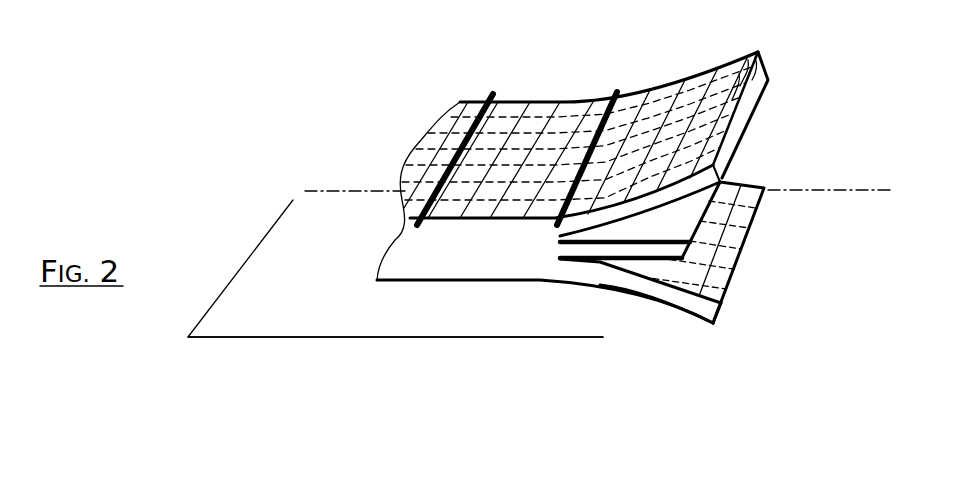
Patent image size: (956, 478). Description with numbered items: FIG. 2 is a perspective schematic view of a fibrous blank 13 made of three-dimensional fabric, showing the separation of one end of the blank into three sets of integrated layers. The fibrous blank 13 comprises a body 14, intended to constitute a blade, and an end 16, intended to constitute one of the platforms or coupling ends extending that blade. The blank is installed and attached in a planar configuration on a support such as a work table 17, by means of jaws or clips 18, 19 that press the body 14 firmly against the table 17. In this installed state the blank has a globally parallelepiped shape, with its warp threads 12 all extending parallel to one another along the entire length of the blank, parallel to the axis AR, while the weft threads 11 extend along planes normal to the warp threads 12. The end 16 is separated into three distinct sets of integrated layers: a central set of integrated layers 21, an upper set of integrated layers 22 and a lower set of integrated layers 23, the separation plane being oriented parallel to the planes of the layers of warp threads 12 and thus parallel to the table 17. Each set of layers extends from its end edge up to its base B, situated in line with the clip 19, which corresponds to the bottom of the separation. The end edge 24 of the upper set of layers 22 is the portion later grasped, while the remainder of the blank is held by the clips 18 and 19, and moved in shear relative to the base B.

The weft threads 11 is at (723, 87).
The warp threads 12 is at (768, 81).
The fibrous blank 13 is at (364, 100).
The body 14 is at (454, 300).
The end 16 is at (658, 320).
The work table 17 is at (395, 315).
The clip 18 is at (493, 94).
The clip 19 is at (620, 88).
The central set of integrated layers 21 is at (732, 215).
The upper set of integrated layers 22 is at (737, 157).
The lower set of integrated layers 23 is at (727, 300).
The end edge 24 is at (739, 127).
The axis AR is at (332, 194).
The base B is at (546, 252).